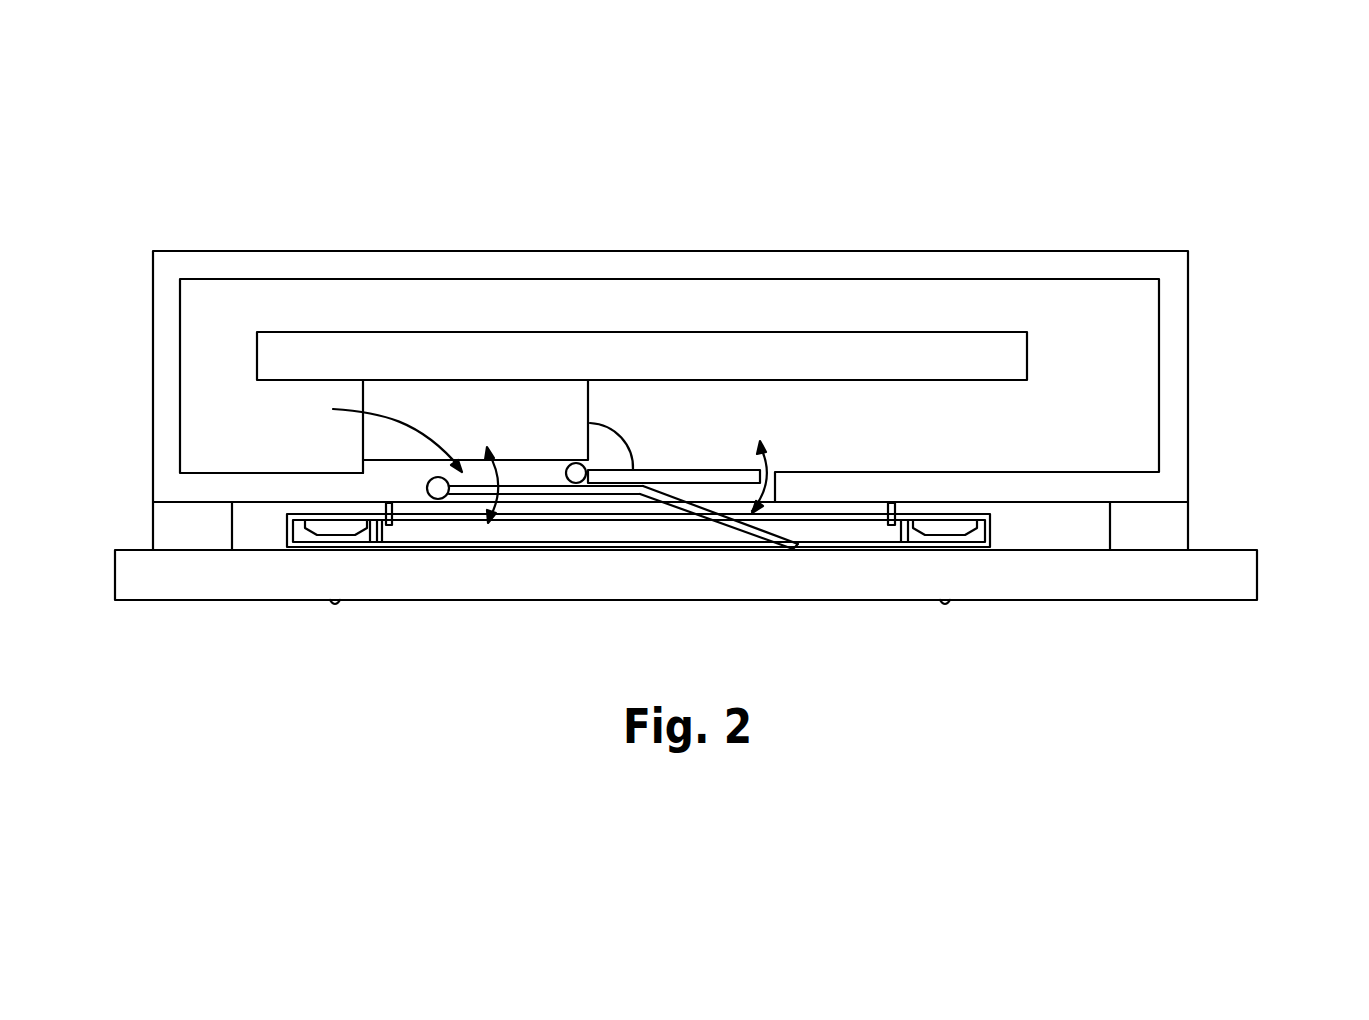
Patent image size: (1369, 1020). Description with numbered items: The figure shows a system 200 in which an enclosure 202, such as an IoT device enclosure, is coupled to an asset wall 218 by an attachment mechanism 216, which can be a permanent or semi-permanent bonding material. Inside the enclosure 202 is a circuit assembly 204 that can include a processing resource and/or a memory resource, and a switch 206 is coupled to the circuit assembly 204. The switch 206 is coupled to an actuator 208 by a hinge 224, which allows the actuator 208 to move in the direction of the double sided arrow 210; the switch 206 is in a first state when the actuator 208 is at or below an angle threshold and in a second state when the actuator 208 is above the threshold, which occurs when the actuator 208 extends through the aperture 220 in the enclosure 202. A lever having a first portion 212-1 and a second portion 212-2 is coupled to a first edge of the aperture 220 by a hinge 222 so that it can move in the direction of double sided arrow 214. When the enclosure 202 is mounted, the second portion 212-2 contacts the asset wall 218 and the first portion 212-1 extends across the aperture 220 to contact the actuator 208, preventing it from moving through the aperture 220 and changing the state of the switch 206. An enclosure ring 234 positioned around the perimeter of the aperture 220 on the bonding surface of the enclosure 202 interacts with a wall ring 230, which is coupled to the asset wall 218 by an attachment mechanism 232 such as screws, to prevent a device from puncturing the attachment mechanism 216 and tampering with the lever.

The system 200 is at (1050, 157).
The enclosure 202 is at (1188, 408).
The circuit assembly 204 is at (1027, 352).
The switch 206 is at (590, 405).
The actuator 208 is at (698, 469).
The double sided arrow 210 is at (773, 458).
The first portion 212-1 is at (602, 495).
The second portion 212-2 is at (697, 517).
The double sided arrow 214 is at (502, 500).
The attachment mechanism 216 is at (153, 526).
The asset wall 218 is at (1257, 572).
The aperture 220 is at (380, 431).
The hinge 222 is at (432, 481).
The hinge 224 is at (576, 483).
The wall ring 230 is at (993, 530).
The attachment mechanism 232 is at (336, 606).
The enclosure ring 234 is at (362, 513).